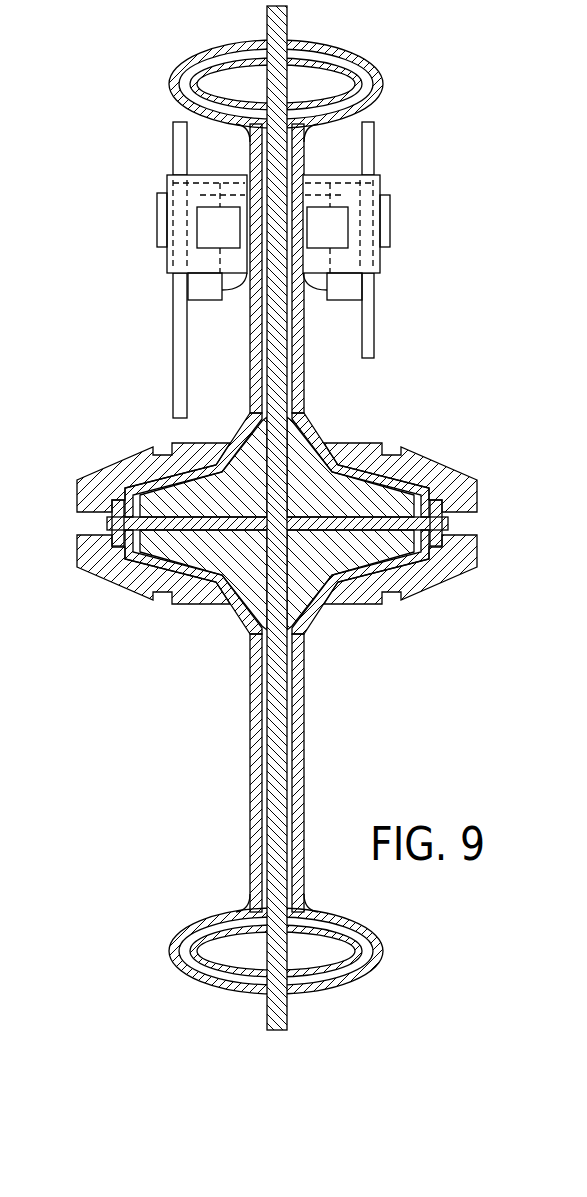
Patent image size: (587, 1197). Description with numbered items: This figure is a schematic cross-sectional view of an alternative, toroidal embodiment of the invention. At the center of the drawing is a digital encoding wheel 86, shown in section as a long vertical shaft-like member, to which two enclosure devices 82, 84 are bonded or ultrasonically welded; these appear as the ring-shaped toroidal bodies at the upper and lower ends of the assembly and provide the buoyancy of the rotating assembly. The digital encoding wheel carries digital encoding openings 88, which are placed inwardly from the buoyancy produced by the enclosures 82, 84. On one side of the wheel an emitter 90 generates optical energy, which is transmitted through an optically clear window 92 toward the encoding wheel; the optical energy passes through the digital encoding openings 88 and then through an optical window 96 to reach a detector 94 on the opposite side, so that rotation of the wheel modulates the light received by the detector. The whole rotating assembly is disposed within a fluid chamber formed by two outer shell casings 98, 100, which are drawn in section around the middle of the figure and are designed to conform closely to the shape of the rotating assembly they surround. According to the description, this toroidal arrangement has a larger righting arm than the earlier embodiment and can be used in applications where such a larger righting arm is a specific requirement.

The enclosure device 82 is at (220, 64).
The enclosure device 84 is at (327, 72).
The digital encoding wheel 86 is at (274, 402).
The digital encoding openings 88 is at (300, 165).
The emitter 90 is at (420, 195).
The optically clear window 92 is at (300, 192).
The detector 94 is at (140, 182).
The optical window 96 is at (258, 202).
The outer shell casing 98 is at (327, 432).
The outer shell casing 100 is at (132, 463).